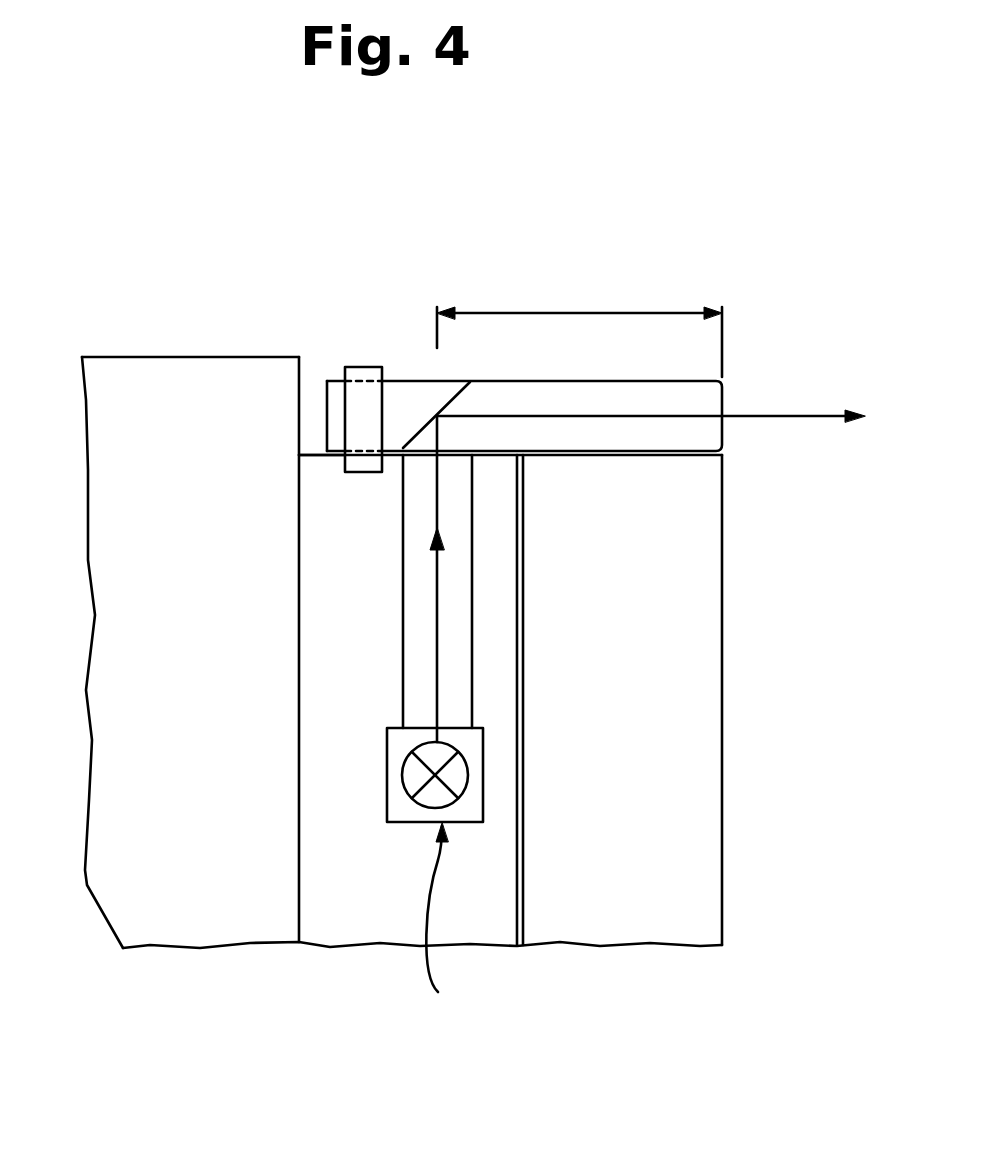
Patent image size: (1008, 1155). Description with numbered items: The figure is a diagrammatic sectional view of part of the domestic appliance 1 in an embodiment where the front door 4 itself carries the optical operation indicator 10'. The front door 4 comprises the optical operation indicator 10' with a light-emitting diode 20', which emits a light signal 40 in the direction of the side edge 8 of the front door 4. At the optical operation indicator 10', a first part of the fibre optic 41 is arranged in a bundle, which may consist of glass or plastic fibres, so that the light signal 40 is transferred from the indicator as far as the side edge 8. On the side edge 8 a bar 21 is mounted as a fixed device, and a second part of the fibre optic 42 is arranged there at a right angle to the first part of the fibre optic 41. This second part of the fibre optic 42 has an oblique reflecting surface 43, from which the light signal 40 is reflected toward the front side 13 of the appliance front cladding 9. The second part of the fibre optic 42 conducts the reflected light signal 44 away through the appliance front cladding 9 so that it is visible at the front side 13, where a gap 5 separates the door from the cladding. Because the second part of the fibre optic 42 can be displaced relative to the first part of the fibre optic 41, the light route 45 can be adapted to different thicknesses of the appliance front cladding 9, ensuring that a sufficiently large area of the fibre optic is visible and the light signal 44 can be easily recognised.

The domestic appliance 1 is at (122, 370).
The front door 4 is at (332, 920).
The gap 5 is at (522, 882).
The side edge 8 is at (333, 458).
The appliance front cladding 9 is at (682, 872).
The optical operation indicator 10' is at (457, 921).
The front side 13 is at (722, 718).
The light-emitting diode 20' is at (337, 775).
The bar 21 is at (363, 367).
The light signal 40 is at (433, 638).
The first part of the fibre optic 41 is at (422, 573).
The second part of the fibre optic 42 is at (705, 428).
The oblique reflecting surface 43 is at (426, 425).
The reflected light signal 44 is at (793, 417).
The light route 45 is at (617, 313).